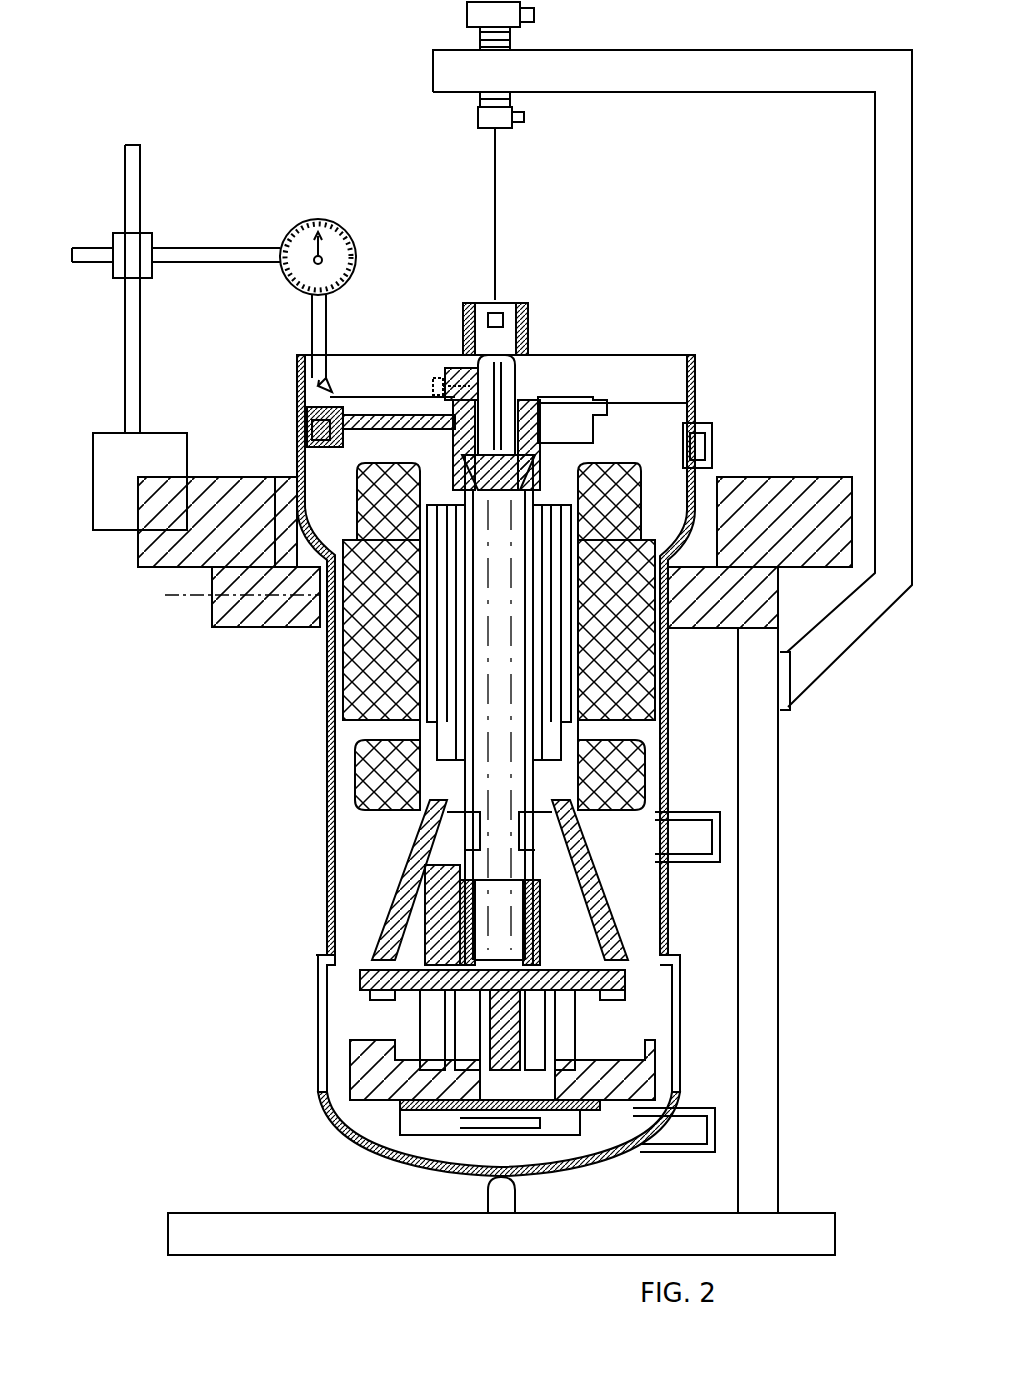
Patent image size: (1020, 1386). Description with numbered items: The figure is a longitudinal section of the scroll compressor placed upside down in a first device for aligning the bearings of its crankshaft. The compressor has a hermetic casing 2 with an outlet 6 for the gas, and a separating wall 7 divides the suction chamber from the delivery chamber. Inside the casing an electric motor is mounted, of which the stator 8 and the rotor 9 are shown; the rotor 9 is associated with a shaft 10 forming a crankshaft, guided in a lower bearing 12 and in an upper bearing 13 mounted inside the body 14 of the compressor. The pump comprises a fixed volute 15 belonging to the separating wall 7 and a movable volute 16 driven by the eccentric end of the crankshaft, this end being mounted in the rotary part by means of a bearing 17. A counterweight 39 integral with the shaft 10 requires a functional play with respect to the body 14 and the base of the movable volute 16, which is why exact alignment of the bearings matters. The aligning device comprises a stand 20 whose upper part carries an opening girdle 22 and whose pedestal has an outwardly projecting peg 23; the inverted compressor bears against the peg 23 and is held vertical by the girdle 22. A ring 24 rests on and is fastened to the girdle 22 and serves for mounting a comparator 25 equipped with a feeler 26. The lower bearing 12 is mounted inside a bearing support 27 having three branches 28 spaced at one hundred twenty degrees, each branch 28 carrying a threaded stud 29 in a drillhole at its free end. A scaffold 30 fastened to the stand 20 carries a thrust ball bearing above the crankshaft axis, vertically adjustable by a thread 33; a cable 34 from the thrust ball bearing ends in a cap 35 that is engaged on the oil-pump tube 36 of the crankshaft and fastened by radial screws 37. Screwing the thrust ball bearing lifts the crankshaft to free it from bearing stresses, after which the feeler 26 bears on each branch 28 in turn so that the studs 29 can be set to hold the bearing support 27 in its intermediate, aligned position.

The hermetic casing 2 is at (330, 762).
The outlet 6 is at (668, 1140).
The separating wall 7 is at (655, 1057).
The stator 8 is at (345, 678).
The rotor 9 is at (438, 680).
The shaft 10 is at (500, 762).
The lower bearing 12 is at (548, 445).
The upper bearing 13 is at (540, 844).
The body 14 is at (440, 945).
The fixed volute 15 is at (600, 1023).
The movable volute 16 is at (600, 1010).
The bearing 17 is at (470, 895).
The stand 20 is at (760, 978).
The opening girdle 22 is at (222, 627).
The peg 23 is at (500, 1197).
The ring 24 is at (170, 540).
The comparator 25 is at (324, 220).
The feeler 26 is at (330, 385).
The bearing support 27 is at (622, 438).
The branch 28 is at (393, 415).
The threaded stud 29 is at (300, 402).
The bracket 30 is at (885, 230).
The thread 33 is at (512, 35).
The cable 34 is at (497, 178).
The cap 35 is at (520, 300).
The oil-pump tube 36 is at (500, 388).
The radial screw 37 is at (452, 390).
The counterweight 39 is at (435, 920).